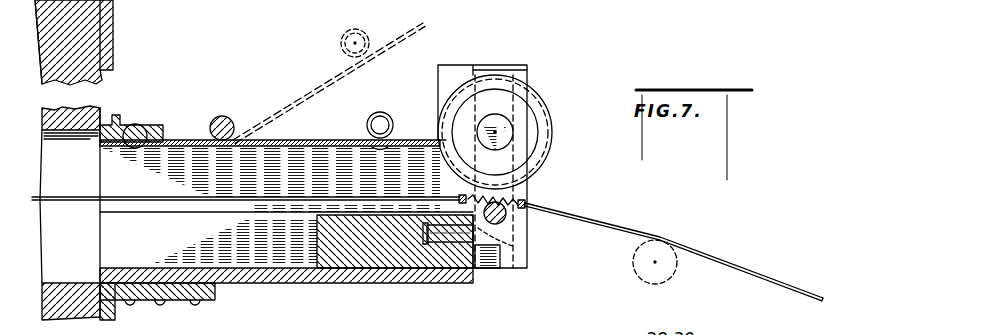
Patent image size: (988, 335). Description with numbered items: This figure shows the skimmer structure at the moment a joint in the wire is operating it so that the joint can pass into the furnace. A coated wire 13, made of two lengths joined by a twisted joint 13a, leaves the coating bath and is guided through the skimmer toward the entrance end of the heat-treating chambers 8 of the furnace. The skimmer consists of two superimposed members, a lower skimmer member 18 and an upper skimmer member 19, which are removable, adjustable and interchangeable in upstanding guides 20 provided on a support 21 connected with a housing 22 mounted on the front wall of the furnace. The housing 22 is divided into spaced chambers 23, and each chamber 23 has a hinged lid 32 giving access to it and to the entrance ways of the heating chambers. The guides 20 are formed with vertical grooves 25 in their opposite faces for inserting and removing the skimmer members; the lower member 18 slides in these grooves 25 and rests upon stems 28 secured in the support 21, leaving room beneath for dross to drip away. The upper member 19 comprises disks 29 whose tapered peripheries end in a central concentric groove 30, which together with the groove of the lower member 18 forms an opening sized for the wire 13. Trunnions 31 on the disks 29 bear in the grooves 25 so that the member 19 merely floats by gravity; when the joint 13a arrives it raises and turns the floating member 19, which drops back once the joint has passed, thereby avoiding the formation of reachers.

The heat-treating chambers 8 is at (77, 213).
The wire 13 is at (738, 268).
The joint 13a is at (525, 193).
The skimmer member 18 is at (510, 224).
The skimmer member 19 is at (552, 115).
The upstanding guides 20 is at (452, 66).
The support 21 is at (378, 268).
The housing 22 is at (270, 281).
The chambers 23 is at (163, 165).
The grooves 25 is at (500, 70).
The stems 28 is at (500, 256).
The disks 29 is at (535, 140).
The concentric groove 30 is at (540, 85).
The trunnions 31 is at (505, 145).
The hinged lid 32 is at (305, 140).